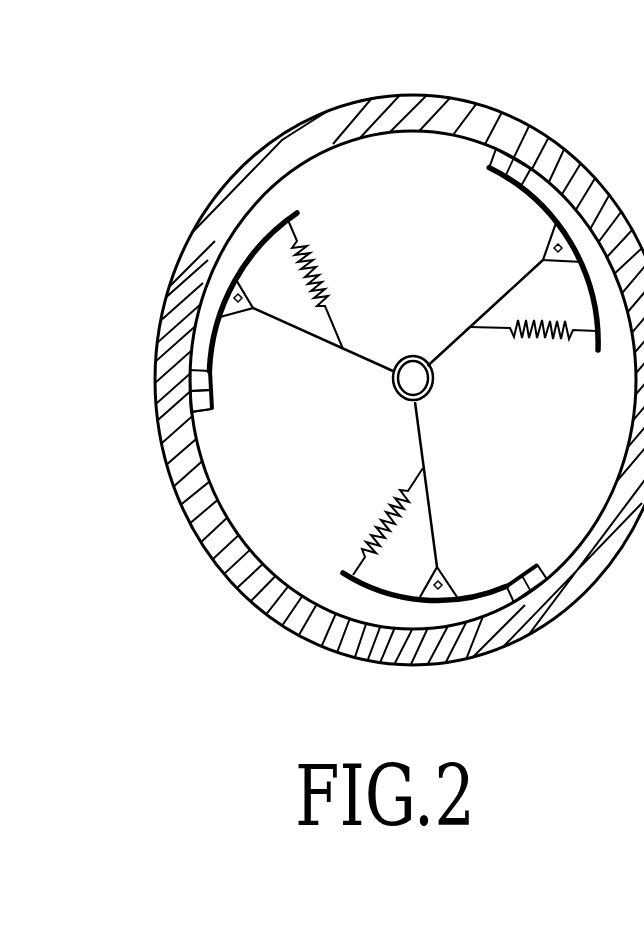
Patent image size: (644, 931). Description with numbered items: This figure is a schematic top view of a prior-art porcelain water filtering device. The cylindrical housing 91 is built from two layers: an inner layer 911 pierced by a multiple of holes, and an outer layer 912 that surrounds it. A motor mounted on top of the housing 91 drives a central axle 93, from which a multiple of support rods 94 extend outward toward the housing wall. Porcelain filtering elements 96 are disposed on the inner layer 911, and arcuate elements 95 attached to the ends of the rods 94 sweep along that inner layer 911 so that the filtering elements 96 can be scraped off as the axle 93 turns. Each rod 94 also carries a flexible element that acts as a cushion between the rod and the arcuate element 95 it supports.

The housing 91 is at (366, 415).
The inner layer 911 is at (298, 165).
The outer layer 912 is at (332, 108).
The axle 93 is at (364, 394).
The support rods 94 is at (403, 384).
The arcuate elements 95 is at (212, 383).
The porcelain filtering elements 96 is at (196, 412).